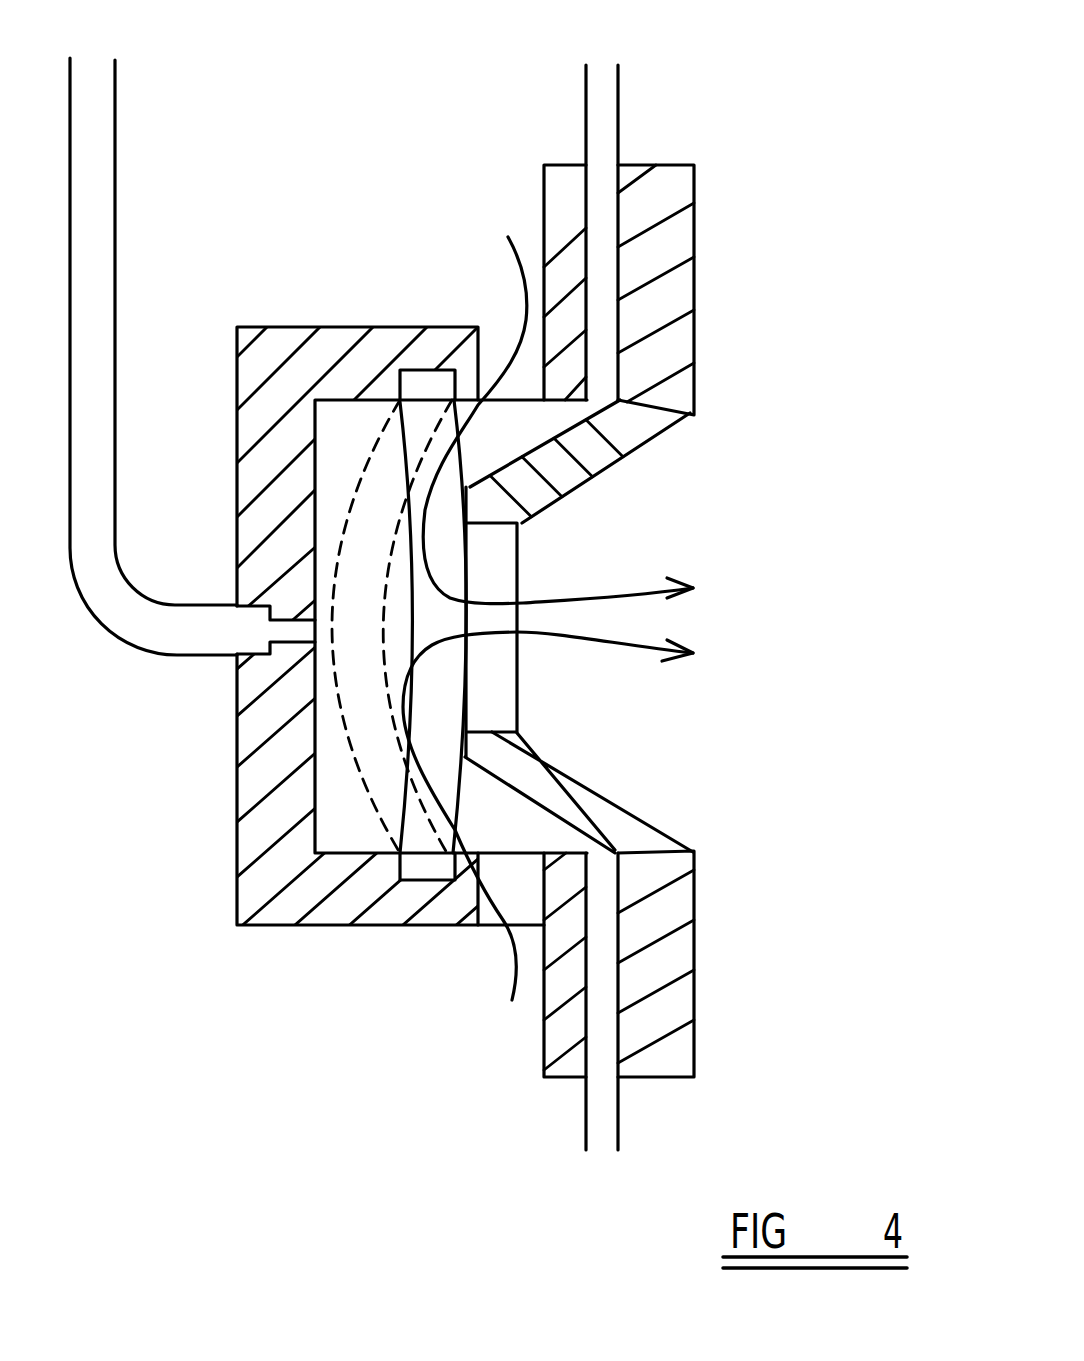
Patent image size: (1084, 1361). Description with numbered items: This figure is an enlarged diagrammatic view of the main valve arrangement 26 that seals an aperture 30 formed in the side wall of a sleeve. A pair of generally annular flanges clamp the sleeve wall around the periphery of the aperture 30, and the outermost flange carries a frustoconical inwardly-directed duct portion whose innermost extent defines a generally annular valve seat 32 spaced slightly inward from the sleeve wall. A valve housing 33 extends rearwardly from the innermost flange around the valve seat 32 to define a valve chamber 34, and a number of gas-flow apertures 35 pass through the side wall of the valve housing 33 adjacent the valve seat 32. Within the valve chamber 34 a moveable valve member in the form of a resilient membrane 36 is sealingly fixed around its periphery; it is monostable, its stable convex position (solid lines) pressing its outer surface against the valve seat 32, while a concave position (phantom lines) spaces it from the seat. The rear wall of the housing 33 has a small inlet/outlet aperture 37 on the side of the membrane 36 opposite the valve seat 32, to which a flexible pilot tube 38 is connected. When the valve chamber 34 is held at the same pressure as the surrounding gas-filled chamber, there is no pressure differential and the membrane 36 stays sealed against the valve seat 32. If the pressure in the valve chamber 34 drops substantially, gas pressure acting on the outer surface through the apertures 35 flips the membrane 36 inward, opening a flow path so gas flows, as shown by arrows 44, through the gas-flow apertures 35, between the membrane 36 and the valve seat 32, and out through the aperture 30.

The main valve arrangement 26 is at (713, 507).
The aperture 30 is at (545, 564).
The valve seat 32 is at (480, 733).
The valve housing 33 is at (365, 880).
The valve chamber 34 is at (343, 818).
The gas-flow apertures 35 is at (503, 347).
The resilient membrane 36 is at (457, 560).
The inlet/outlet aperture 37 is at (287, 633).
The flexible pilot tube 38 is at (110, 227).
The arrows 44 is at (513, 267).